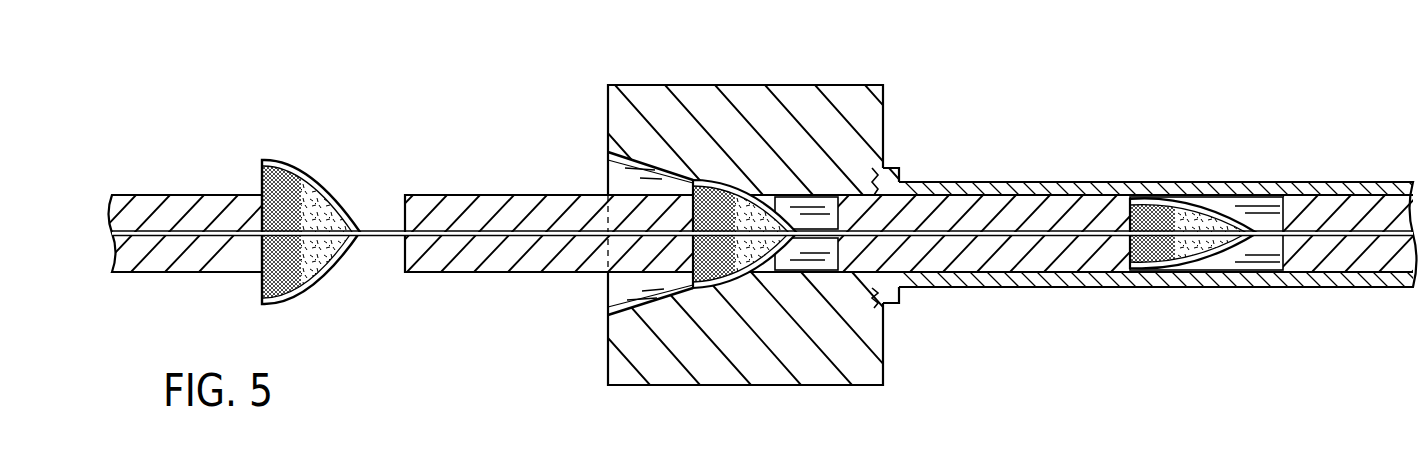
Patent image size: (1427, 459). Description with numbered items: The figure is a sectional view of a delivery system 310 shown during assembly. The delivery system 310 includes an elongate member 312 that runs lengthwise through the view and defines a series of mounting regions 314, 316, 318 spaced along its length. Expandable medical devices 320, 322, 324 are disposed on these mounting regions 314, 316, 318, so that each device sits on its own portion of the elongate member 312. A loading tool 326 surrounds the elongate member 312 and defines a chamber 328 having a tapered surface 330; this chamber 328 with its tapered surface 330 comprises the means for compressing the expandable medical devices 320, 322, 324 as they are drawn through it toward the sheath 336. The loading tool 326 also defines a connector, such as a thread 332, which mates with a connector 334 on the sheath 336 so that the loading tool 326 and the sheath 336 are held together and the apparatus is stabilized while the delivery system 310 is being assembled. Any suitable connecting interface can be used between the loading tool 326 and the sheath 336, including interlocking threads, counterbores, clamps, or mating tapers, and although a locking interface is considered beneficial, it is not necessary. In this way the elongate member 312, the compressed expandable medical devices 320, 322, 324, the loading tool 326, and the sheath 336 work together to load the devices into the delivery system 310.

The delivery system 310 is at (293, 110).
The elongate member 312 is at (1020, 212).
The mounting region 314 is at (368, 250).
The mounting region 316 is at (823, 272).
The mounting region 318 is at (1273, 243).
The expandable medical device 320 is at (1197, 188).
The expandable medical device 322 is at (742, 176).
The expandable medical device 324 is at (321, 158).
The loading tool 326 is at (713, 100).
The chamber 328 is at (617, 284).
The tapered surface 330 is at (622, 303).
The thread 332 is at (867, 185).
The connector 334 is at (877, 175).
The sheath 336 is at (975, 182).